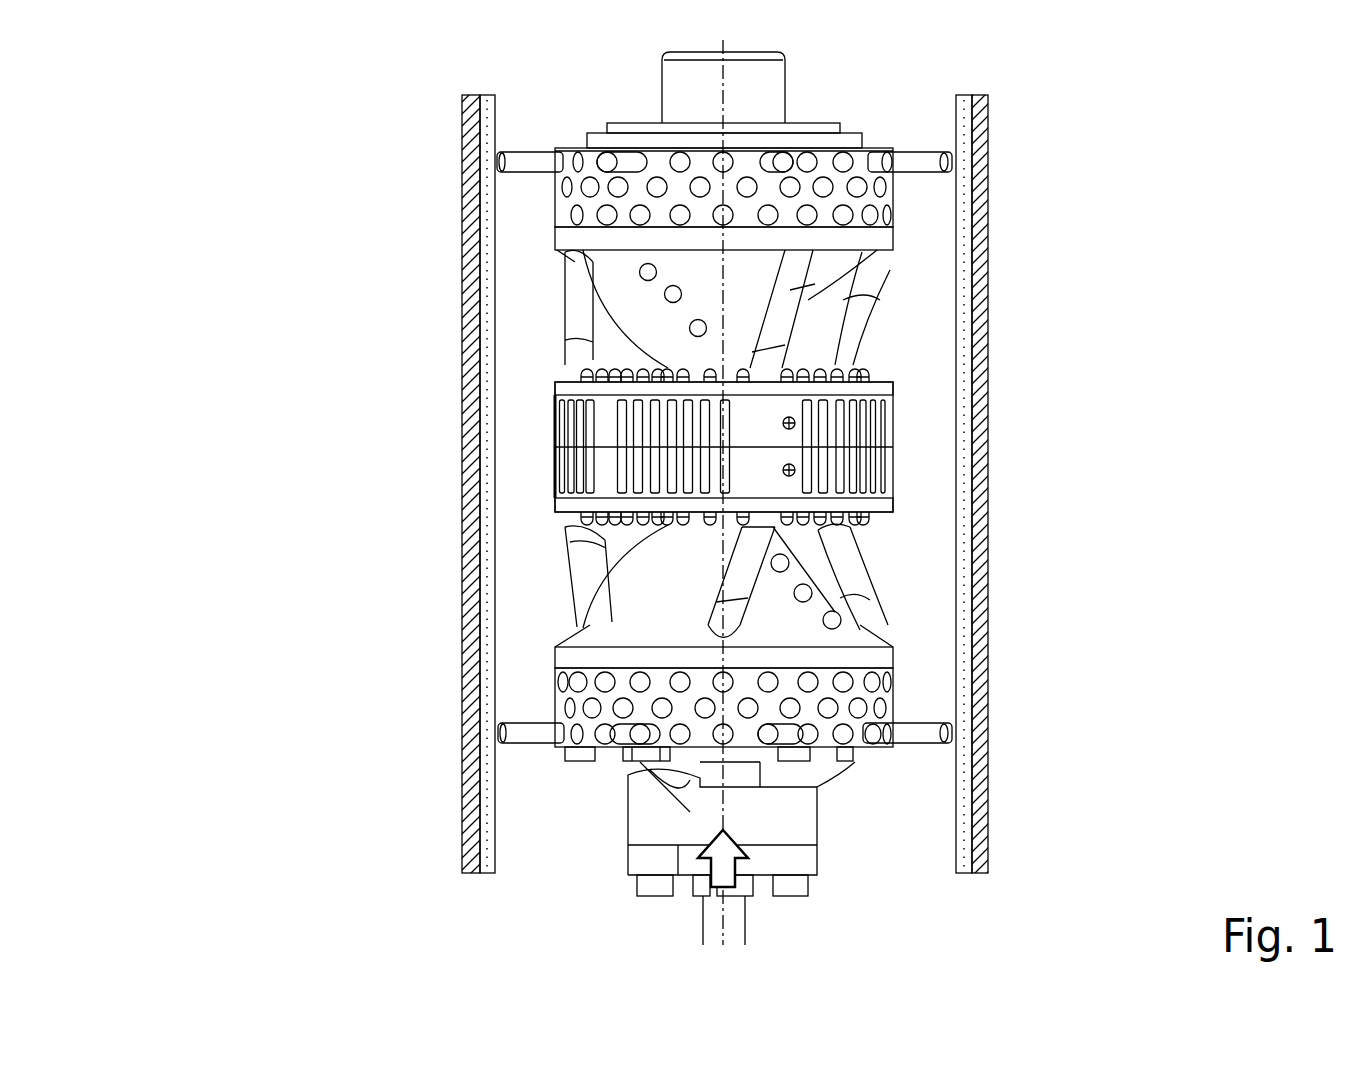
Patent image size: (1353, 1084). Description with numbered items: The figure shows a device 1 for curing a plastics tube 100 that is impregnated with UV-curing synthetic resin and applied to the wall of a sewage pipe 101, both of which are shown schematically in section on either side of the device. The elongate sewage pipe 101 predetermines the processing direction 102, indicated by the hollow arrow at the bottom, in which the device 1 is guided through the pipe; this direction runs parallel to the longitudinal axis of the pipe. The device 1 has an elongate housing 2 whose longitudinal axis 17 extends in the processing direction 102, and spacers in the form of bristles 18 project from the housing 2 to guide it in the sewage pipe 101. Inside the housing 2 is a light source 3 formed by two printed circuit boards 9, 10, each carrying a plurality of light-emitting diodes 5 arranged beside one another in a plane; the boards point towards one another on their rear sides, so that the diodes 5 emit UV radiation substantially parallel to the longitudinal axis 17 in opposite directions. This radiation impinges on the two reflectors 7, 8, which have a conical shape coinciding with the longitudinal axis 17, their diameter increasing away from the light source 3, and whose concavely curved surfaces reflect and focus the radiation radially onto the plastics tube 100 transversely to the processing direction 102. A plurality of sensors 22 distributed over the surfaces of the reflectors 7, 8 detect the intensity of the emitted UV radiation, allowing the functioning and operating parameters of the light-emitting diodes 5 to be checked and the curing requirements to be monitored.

The device 1 is at (148, 132).
The housing 2 is at (890, 146).
The light source 3 is at (702, 440).
The light-emitting diodes 5 is at (793, 381).
The reflector 7 is at (612, 265).
The reflector 8 is at (655, 607).
The printed circuit board 9 is at (602, 393).
The printed circuit board 10 is at (603, 500).
The longitudinal axis 17 is at (735, 290).
The bristles 18 is at (880, 168).
The sensors 22 is at (690, 330).
The plastics tube 100 is at (972, 648).
The sewage pipe 101 is at (988, 716).
The processing direction 102 is at (738, 870).